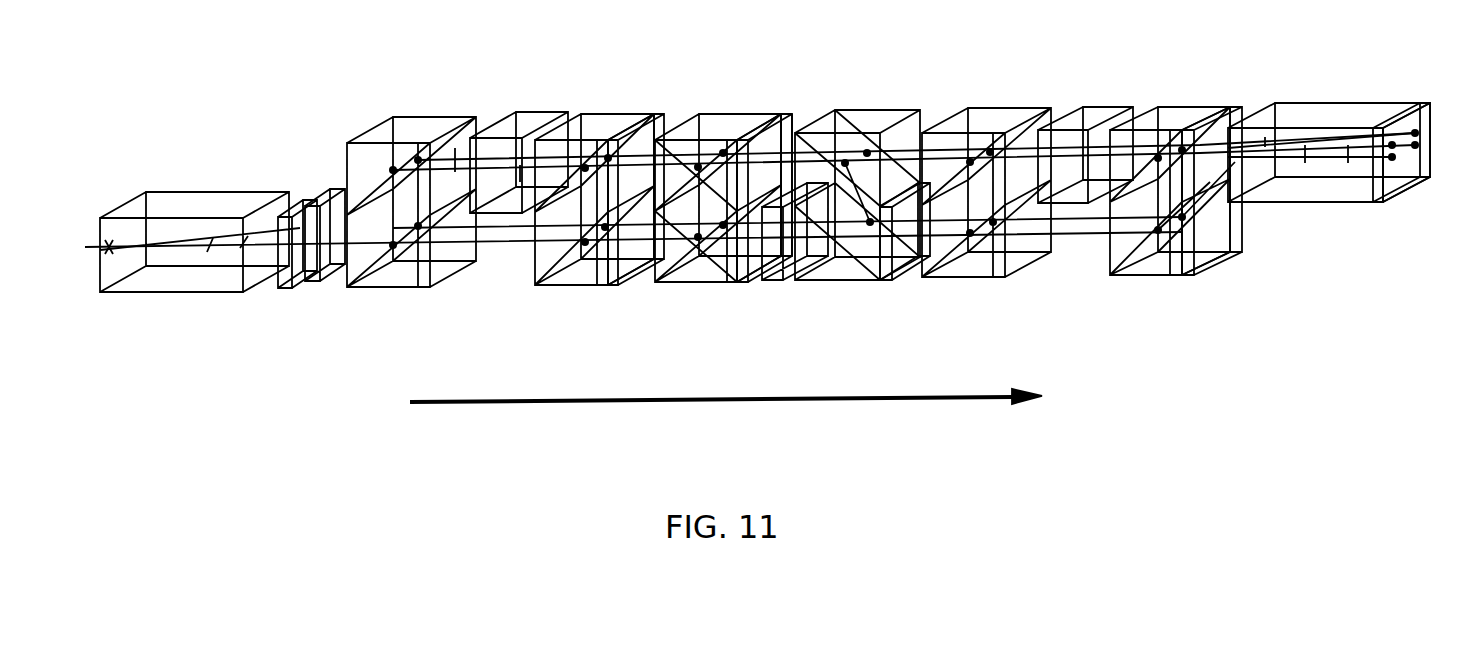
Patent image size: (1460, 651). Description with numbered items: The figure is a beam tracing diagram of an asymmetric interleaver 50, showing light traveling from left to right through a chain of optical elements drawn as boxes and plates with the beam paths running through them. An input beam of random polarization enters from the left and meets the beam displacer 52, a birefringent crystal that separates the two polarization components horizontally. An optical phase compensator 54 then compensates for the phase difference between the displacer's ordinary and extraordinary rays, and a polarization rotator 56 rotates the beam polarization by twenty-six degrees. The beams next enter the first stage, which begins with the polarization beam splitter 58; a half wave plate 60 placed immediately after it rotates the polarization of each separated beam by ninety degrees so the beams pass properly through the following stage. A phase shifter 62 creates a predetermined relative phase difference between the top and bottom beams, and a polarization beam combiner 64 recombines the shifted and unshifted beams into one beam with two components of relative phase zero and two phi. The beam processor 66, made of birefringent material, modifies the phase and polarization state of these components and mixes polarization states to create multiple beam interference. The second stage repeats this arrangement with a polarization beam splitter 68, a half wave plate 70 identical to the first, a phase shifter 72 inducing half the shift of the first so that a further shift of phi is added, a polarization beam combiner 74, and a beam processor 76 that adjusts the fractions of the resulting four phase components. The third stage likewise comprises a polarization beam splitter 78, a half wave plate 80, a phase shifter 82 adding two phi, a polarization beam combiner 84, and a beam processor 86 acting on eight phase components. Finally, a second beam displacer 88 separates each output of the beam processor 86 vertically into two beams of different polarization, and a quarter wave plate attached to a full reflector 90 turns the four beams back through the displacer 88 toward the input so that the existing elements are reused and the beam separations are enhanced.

The optical system 50 is at (277, 360).
The beam displacer 52 is at (223, 207).
The optical phase compensator 54 is at (307, 207).
The polarization rotator 56 is at (337, 190).
The polarization beam splitter 58 is at (412, 132).
The half wave plate 60 is at (497, 118).
The phase shifter 62 is at (537, 117).
The polarization beam combiner 64 is at (608, 123).
The beam processor 66 is at (698, 123).
The polarization beam splitter 68 is at (730, 123).
The half wave plate 70 is at (783, 125).
The phase shifter 72 is at (773, 282).
The polarization beam combiner 74 is at (873, 115).
The beam processor 76 is at (893, 277).
The polarization beam splitter 78 is at (977, 123).
The half wave plate 80 is at (1047, 123).
The phase shifter 82 is at (1110, 120).
The polarization beam combiner 84 is at (1177, 117).
The beam processor 86 is at (1242, 103).
The beam displacer 88 is at (1317, 117).
The quarter wave plate attached to a 100% reflector 90 is at (1432, 125).